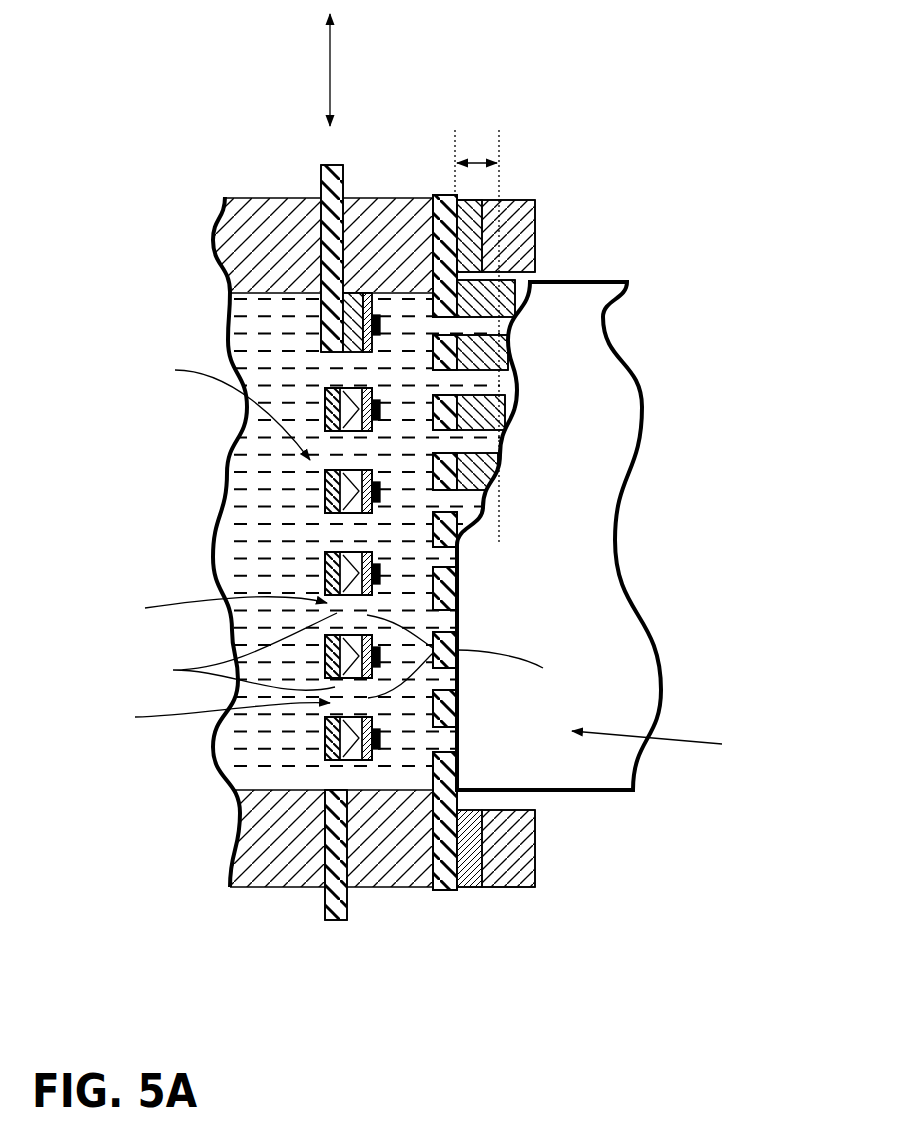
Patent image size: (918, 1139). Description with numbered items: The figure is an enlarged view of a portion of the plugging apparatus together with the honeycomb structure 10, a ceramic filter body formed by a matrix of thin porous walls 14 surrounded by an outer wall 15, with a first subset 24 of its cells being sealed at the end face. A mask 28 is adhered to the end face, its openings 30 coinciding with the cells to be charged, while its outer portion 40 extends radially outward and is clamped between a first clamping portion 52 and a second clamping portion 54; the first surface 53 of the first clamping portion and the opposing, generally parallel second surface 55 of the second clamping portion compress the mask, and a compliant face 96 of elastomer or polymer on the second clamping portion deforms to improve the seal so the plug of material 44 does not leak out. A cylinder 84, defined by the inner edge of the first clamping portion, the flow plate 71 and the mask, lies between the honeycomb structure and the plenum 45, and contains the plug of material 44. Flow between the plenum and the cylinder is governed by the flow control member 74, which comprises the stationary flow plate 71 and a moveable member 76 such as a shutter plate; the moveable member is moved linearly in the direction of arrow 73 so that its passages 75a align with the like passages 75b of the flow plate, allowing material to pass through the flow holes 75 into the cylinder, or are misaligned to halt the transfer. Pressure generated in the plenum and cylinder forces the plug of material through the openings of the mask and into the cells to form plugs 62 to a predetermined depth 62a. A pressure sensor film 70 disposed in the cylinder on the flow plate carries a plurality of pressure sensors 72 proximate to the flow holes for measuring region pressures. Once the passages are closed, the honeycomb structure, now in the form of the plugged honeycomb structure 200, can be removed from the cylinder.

The honeycomb structure 10 is at (595, 600).
The walls 14 is at (500, 418).
The outer wall 15 is at (597, 282).
The first subset of cells 24 is at (470, 525).
The mask 28 is at (443, 193).
The openings 30 is at (445, 368).
The outer portion 40 is at (462, 893).
The plug of material 44 is at (262, 509).
The plenum 45 is at (258, 550).
The first clamping portion 52 is at (372, 230).
The first surface 53 is at (400, 843).
The second clamping portion 54 is at (515, 198).
The second surface 55 is at (433, 255).
The plugs 62 is at (507, 442).
The predetermined depth 62a is at (472, 197).
The pressure sensor film 70 is at (484, 262).
The flow plate 71 is at (352, 733).
The pressure sensors 72 is at (500, 380).
The arrow 73 is at (330, 78).
The flow control member 74 is at (225, 408).
The flow holes 75 is at (212, 664).
The passages 75a is at (231, 651).
The passages 75b is at (471, 662).
The moveable member 76 is at (320, 178).
The cylinder 84 is at (345, 797).
The compliant face 96 is at (470, 150).
The plugged honeycomb structure 200 is at (670, 746).